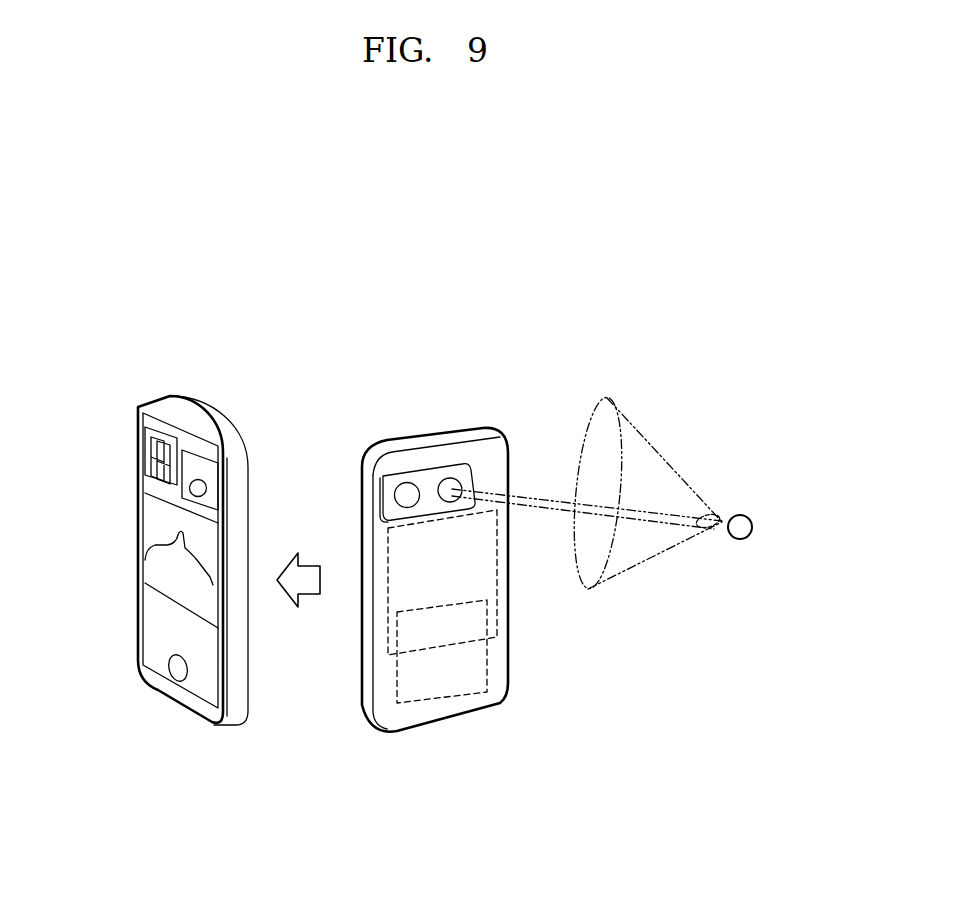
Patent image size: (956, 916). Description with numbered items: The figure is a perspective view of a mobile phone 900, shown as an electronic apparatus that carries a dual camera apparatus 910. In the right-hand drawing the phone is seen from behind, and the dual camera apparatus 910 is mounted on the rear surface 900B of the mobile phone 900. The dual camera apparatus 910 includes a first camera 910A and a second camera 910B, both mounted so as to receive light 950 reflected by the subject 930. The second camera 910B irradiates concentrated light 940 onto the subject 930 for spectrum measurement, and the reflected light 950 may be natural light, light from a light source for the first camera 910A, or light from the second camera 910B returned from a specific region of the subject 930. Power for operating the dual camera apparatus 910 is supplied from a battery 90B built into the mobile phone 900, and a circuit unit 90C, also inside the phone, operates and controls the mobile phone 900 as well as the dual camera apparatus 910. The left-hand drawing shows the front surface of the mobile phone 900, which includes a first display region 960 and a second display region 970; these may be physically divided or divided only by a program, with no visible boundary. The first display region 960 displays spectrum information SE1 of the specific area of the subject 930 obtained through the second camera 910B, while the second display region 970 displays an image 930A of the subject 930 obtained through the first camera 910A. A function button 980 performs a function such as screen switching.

The mobile phone 900 is at (132, 385).
The rear surface 900B is at (485, 712).
The second display region 970 is at (178, 440).
The image of the subject 930A is at (210, 465).
The first display region 960 is at (155, 513).
The spectrum information SE1 is at (158, 547).
The function button 980 is at (178, 672).
The dual camera apparatus 910 is at (482, 372).
The first camera 910A is at (403, 465).
The second camera 910B is at (446, 456).
The circuit unit 90C is at (388, 618).
The battery 90B is at (487, 665).
The concentrated light 940 is at (533, 497).
The light 950 is at (647, 440).
The subject 930 is at (758, 496).